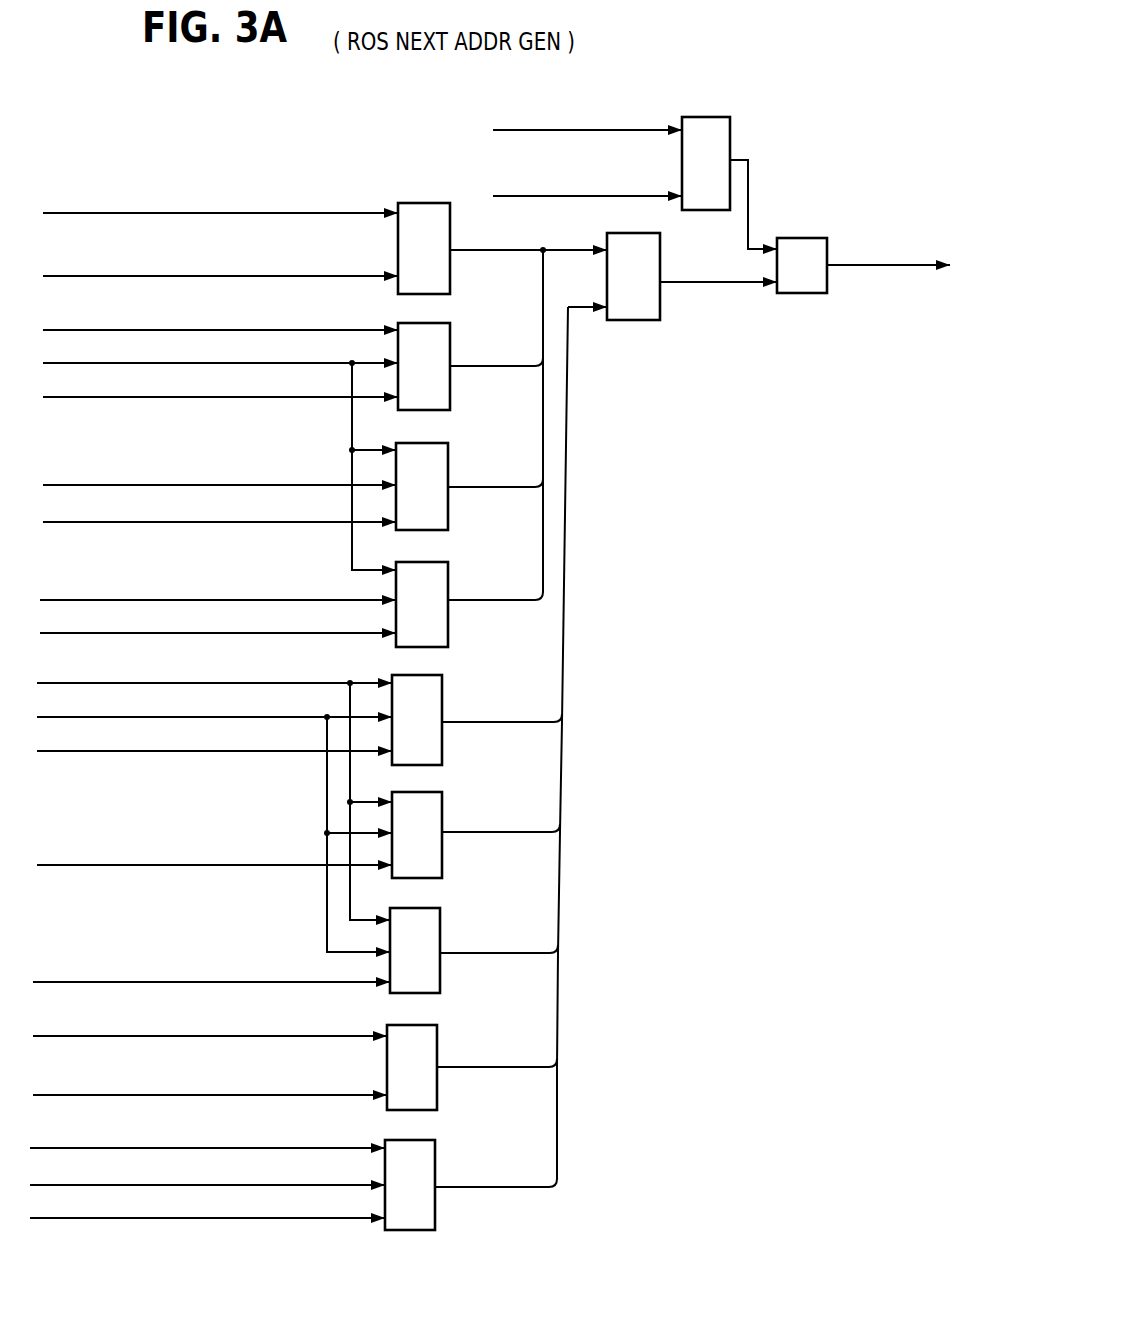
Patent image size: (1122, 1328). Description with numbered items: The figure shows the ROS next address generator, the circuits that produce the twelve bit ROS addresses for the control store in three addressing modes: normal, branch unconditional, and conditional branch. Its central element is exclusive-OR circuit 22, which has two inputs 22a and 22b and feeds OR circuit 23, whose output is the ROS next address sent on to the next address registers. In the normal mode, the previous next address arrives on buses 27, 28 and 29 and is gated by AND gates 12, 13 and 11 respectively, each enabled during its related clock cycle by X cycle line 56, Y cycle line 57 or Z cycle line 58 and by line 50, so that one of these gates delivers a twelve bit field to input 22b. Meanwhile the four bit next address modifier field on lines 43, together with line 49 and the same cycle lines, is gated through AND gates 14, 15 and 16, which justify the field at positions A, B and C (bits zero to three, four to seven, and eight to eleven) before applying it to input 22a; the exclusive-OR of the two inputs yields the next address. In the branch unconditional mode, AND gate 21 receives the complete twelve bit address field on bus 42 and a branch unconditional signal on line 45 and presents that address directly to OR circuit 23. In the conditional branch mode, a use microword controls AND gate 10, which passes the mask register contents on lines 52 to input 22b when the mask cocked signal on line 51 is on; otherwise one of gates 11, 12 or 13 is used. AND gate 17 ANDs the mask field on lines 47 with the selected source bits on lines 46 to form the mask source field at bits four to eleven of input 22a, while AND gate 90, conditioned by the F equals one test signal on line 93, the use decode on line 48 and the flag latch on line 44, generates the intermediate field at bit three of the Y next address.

The AND gate 10 is at (450, 270).
The AND gate 11 is at (450, 388).
The AND gate 12 is at (448, 508).
The AND gate 13 is at (448, 625).
The AND gate 14 is at (442, 760).
The AND gate 15 is at (442, 875).
The AND gate 16 is at (440, 997).
The AND gate 17 is at (387, 1025).
The AND gate 21 is at (728, 145).
The exclusive-OR circuit 22 is at (660, 292).
The input of exclusive-OR circuit 22a is at (568, 330).
The input of exclusive-OR circuit 22b is at (558, 253).
The OR circuit 23 is at (797, 288).
The bus 27 is at (291, 485).
The bus 28 is at (291, 600).
The bus 29 is at (334, 331).
The bus 42 is at (493, 130).
The lines 43 is at (310, 683).
The flag latch on line 44 is at (262, 1218).
The branch unconditional line 45 is at (625, 196).
The selected source bits lines 46 is at (300, 1095).
The mask field lines 47 is at (280, 1036).
The use decode line 48 is at (316, 1186).
The not use/mask checked/branch unconditional line 49 is at (300, 718).
The not mask checked/branch unconditional line 50 is at (298, 371).
The mask cocked line 51 is at (278, 277).
The mask register lines 52 is at (307, 213).
The X cycle line 56 is at (240, 398).
The Y cycle line 57 is at (243, 522).
The Z cycle line 58 is at (253, 634).
The AND gate 90 is at (415, 1229).
The F=1 test line 93 is at (263, 1148).